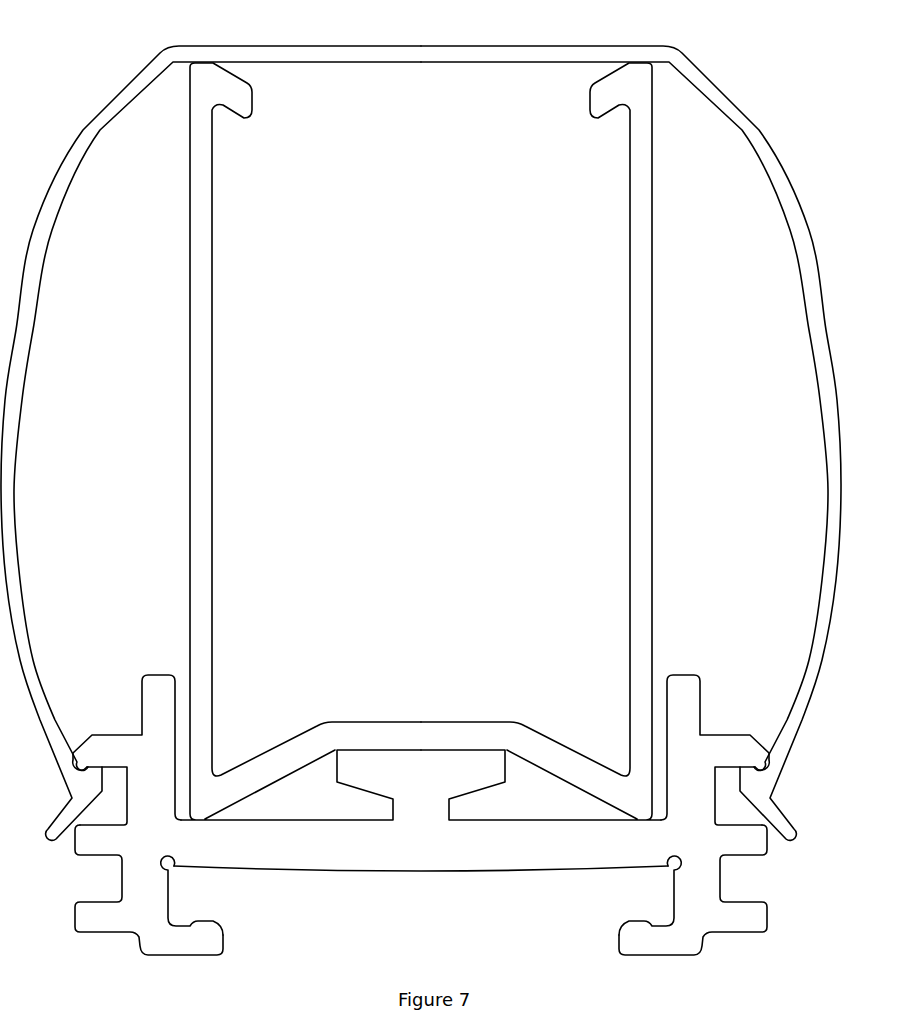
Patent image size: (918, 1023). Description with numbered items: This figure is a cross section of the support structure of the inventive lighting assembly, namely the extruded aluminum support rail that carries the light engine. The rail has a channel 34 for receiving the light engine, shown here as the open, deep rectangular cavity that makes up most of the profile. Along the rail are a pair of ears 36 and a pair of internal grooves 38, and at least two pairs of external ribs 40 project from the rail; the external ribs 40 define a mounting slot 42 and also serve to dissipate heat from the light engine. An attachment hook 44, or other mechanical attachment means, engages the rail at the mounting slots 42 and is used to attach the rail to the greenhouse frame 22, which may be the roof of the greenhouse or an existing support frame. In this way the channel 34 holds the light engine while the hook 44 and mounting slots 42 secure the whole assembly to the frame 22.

The greenhouse frame 22 is at (638, 470).
The channel 34 is at (403, 875).
The ears 36 is at (633, 933).
The internal grooves 38 is at (175, 879).
The external ribs 40 is at (755, 923).
The mounting slot 42 is at (725, 783).
The attachment hook 44 is at (808, 323).